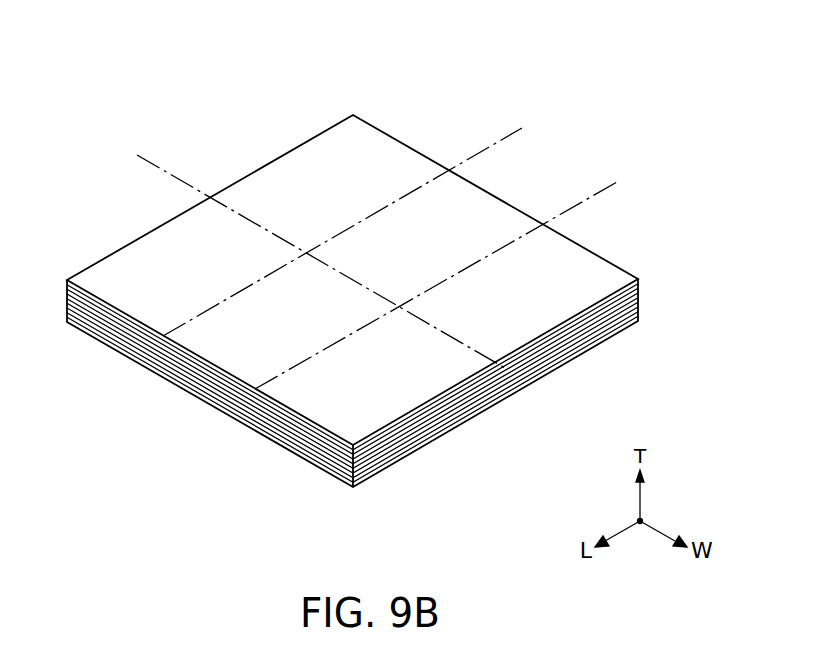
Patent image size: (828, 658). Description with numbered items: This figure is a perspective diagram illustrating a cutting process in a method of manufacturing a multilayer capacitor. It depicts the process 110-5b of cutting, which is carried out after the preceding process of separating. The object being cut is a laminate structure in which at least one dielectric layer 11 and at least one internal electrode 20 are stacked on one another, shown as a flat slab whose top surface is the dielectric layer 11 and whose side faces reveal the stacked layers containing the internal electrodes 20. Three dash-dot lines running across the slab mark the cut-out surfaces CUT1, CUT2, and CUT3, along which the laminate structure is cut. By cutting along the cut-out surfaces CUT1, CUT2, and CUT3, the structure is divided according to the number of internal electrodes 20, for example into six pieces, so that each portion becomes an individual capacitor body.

The process of cutting 110-5b is at (148, 25).
The dielectric layer 11 is at (578, 272).
The internal electrode 20 is at (651, 298).
The cut-out surface CUT1 is at (530, 380).
The cut-out surface CUT2 is at (135, 353).
The cut-out surface CUT3 is at (225, 410).